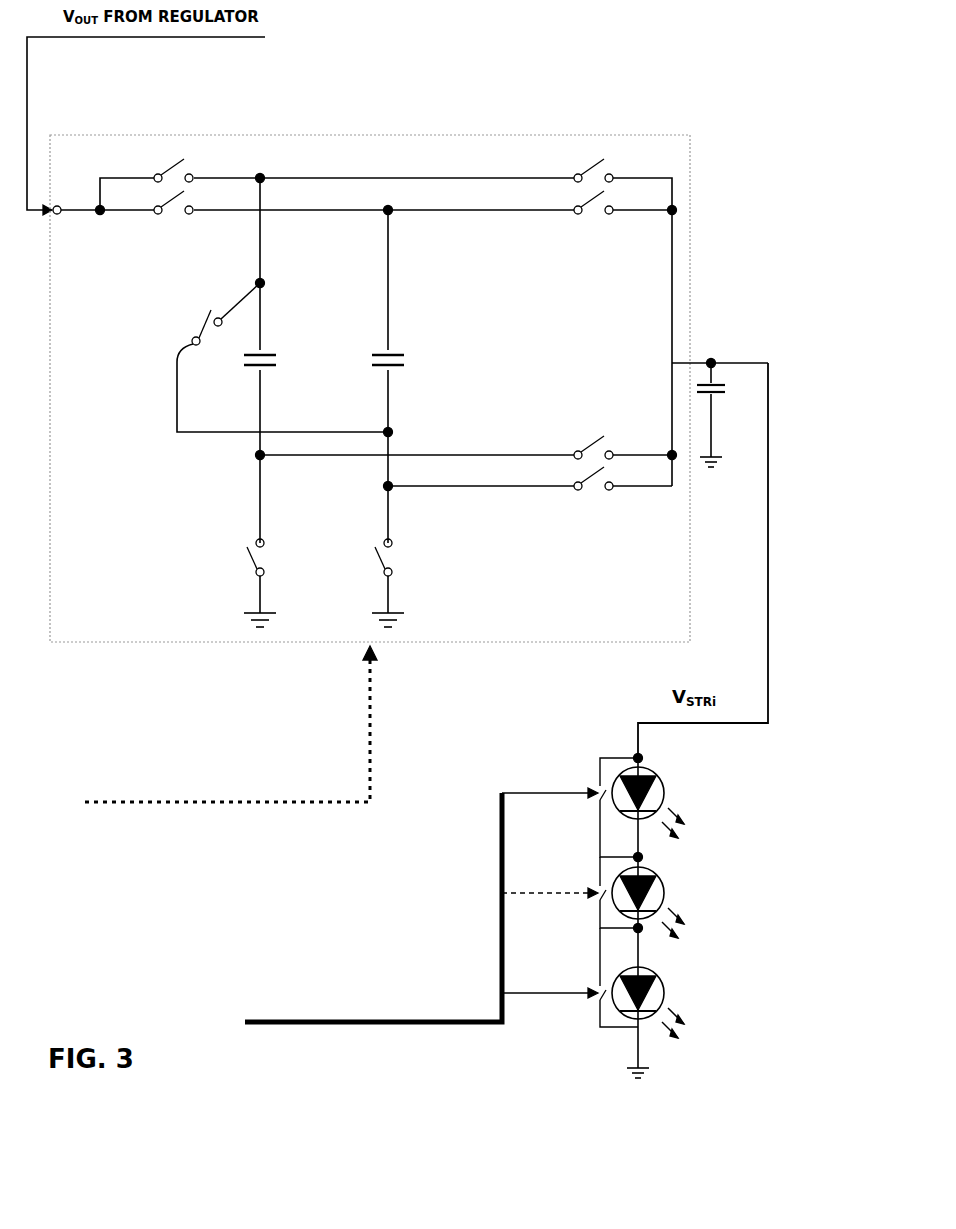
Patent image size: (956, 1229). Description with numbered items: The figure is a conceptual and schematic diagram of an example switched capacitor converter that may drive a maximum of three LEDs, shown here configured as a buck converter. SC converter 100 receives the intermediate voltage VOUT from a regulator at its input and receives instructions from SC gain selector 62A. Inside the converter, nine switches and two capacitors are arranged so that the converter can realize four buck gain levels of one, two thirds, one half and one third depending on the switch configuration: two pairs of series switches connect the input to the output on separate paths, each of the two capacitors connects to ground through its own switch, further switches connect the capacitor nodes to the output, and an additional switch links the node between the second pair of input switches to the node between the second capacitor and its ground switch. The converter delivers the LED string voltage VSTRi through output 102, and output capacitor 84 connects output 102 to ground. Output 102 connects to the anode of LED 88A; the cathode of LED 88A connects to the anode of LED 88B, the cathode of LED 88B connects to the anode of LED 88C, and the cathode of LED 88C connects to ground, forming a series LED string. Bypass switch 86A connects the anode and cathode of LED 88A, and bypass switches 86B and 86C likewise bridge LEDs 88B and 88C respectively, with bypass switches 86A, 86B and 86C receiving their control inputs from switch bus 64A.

The SC converter 100 is at (168, 130).
The output 102 is at (714, 348).
The output capacitor 84 is at (731, 415).
The SC gain selector 62A is at (110, 792).
The switch bus 64A is at (246, 1012).
The bypass switch 86A is at (594, 776).
The bypass switch 86B is at (594, 876).
The bypass switch 86C is at (594, 976).
The LED 88A is at (674, 773).
The LED 88B is at (674, 876).
The LED 88C is at (674, 976).